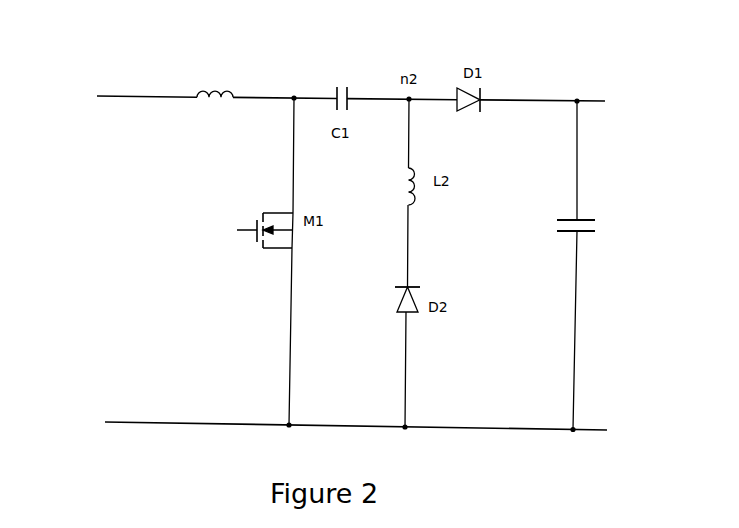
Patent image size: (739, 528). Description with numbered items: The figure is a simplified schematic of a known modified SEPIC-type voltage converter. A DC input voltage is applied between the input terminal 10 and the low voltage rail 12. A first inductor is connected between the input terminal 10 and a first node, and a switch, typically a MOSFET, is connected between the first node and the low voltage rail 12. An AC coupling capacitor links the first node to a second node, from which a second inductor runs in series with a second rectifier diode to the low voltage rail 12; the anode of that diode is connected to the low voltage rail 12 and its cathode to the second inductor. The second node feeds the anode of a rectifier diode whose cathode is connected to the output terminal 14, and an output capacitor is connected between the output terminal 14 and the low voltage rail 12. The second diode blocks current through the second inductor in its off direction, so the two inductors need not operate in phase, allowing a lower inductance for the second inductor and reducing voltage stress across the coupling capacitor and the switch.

The input terminal 10 is at (130, 77).
The low voltage rail 12 is at (110, 398).
The output terminal 14 is at (546, 86).